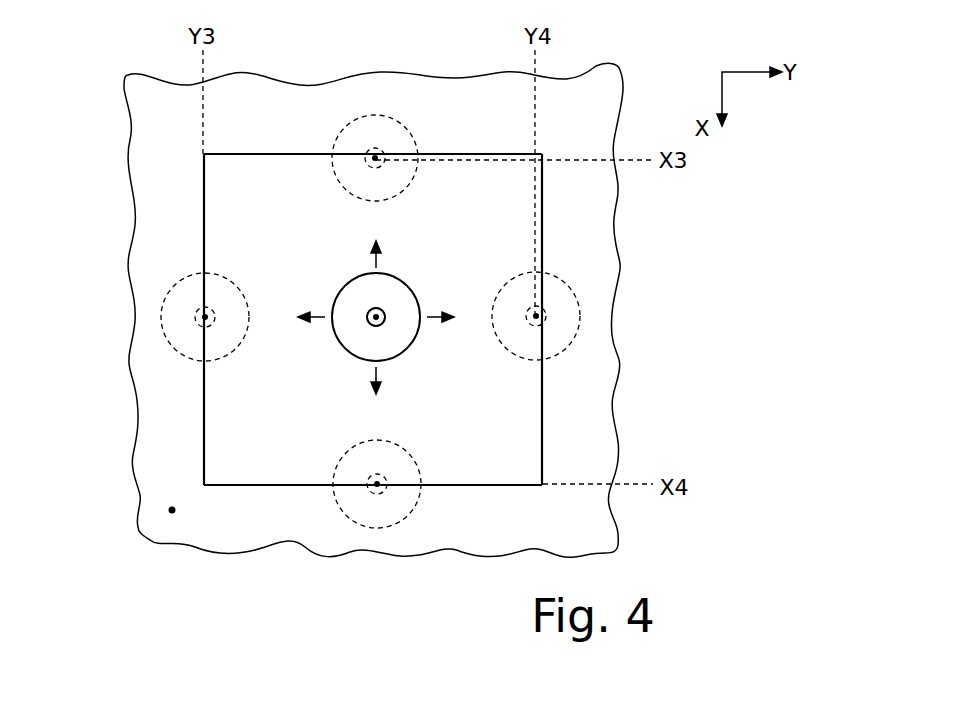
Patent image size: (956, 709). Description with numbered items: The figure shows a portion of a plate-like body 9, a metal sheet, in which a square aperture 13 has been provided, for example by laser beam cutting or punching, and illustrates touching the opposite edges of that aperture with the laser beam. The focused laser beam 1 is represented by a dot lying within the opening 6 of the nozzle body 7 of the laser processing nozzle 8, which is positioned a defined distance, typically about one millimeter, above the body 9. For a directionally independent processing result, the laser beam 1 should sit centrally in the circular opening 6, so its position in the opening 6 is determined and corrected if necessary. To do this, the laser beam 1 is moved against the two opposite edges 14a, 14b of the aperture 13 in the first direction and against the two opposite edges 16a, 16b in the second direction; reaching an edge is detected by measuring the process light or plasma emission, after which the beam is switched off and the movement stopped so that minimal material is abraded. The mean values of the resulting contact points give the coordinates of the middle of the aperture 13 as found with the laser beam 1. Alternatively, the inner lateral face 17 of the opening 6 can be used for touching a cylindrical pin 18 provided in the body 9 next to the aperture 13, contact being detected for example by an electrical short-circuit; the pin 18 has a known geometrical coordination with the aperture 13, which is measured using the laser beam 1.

The focused laser beam 1 is at (385, 312).
The opening 6 is at (368, 323).
The nozzle body 7 is at (352, 292).
The laser processing nozzle 8 is at (410, 265).
The plate-like body 9 is at (600, 96).
The square aperture 13 is at (375, 322).
The edge 14a is at (445, 155).
The edge 14b is at (303, 488).
The edge 16a is at (203, 228).
The edge 16b is at (542, 243).
The inner lateral face 17 is at (387, 323).
The cylindrical pin 18 is at (172, 510).